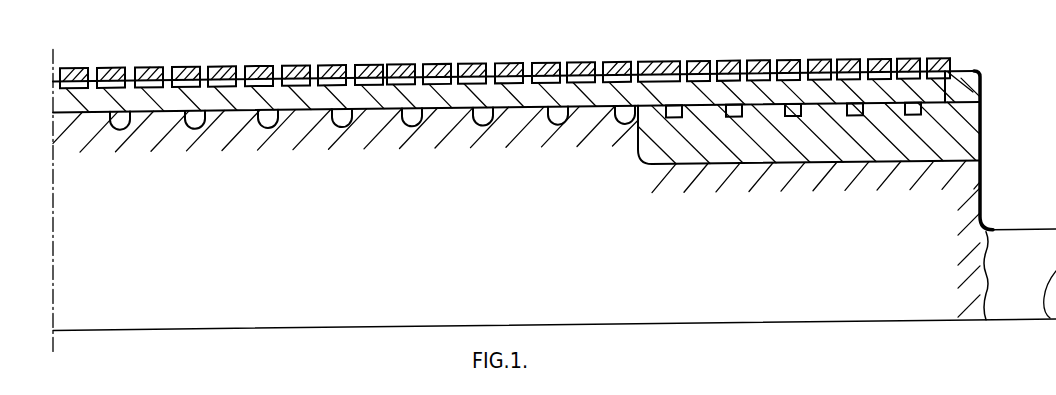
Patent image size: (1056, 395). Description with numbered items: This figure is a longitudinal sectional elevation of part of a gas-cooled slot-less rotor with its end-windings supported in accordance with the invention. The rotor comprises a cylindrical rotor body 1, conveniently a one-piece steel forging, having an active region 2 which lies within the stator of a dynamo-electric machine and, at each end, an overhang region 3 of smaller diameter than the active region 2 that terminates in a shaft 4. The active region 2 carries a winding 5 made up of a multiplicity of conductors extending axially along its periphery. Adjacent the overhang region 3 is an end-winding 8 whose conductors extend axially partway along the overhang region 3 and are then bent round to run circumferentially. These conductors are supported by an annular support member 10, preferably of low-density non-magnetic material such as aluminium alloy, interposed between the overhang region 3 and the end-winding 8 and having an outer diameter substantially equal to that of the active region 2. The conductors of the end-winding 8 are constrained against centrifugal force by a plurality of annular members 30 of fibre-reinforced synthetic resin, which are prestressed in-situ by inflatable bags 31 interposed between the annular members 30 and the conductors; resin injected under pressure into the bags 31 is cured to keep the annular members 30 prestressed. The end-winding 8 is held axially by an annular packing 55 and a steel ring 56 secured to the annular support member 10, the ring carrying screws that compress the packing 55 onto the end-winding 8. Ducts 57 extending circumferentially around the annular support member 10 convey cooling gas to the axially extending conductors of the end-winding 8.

The rotor body 1 is at (554, 196).
The active region 2 is at (308, 114).
The overhang region 3 is at (947, 173).
The shaft 4 is at (1024, 257).
The winding 5 is at (359, 97).
The end-winding 8 is at (717, 101).
The annular support member 10 is at (833, 120).
The annular members 30 is at (810, 69).
The inflatable bags 31 is at (851, 110).
The annular packing 55 is at (935, 71).
The steel ring 56 is at (965, 98).
The ducts 57 is at (859, 115).